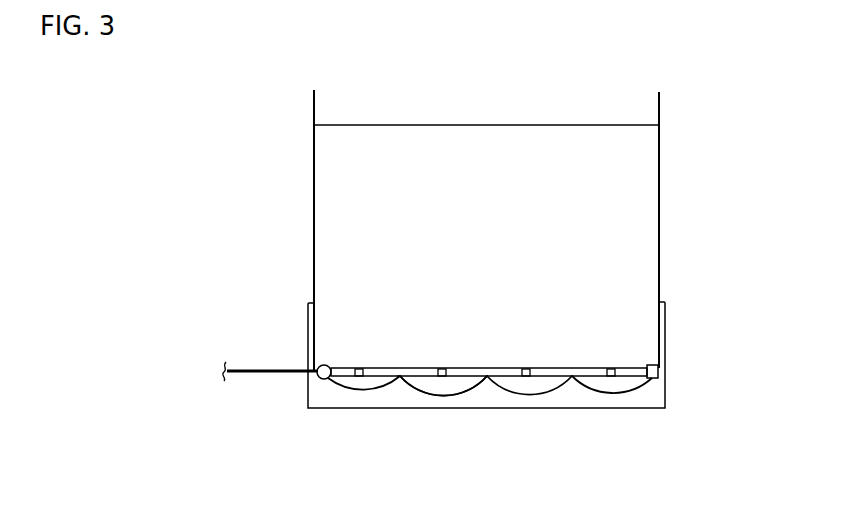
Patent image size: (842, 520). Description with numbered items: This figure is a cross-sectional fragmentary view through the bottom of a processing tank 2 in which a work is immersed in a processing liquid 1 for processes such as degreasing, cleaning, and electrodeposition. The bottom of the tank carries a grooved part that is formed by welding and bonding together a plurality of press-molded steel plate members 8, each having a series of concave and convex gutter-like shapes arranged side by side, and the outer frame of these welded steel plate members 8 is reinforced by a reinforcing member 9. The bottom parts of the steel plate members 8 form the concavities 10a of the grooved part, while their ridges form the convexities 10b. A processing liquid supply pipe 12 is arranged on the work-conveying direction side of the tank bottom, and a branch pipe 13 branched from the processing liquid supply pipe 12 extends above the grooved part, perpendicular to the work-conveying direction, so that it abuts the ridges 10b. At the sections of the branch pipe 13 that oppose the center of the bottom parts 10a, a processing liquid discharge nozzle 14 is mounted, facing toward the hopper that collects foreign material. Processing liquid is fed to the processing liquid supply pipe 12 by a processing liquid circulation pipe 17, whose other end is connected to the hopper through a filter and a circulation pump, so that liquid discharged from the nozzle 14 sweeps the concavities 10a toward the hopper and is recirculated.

The processing liquid 1 is at (357, 140).
The processing tank 2 is at (674, 150).
The steel plate member 8 is at (553, 387).
The reinforcing member 9 is at (466, 407).
The concavity 10a is at (437, 388).
The convexity 10b is at (400, 376).
The processing liquid supply pipe 12 is at (323, 366).
The branch pipe 13 is at (598, 368).
The processing liquid discharge nozzle 14 is at (442, 368).
The processing liquid circulation pipe 17 is at (253, 375).